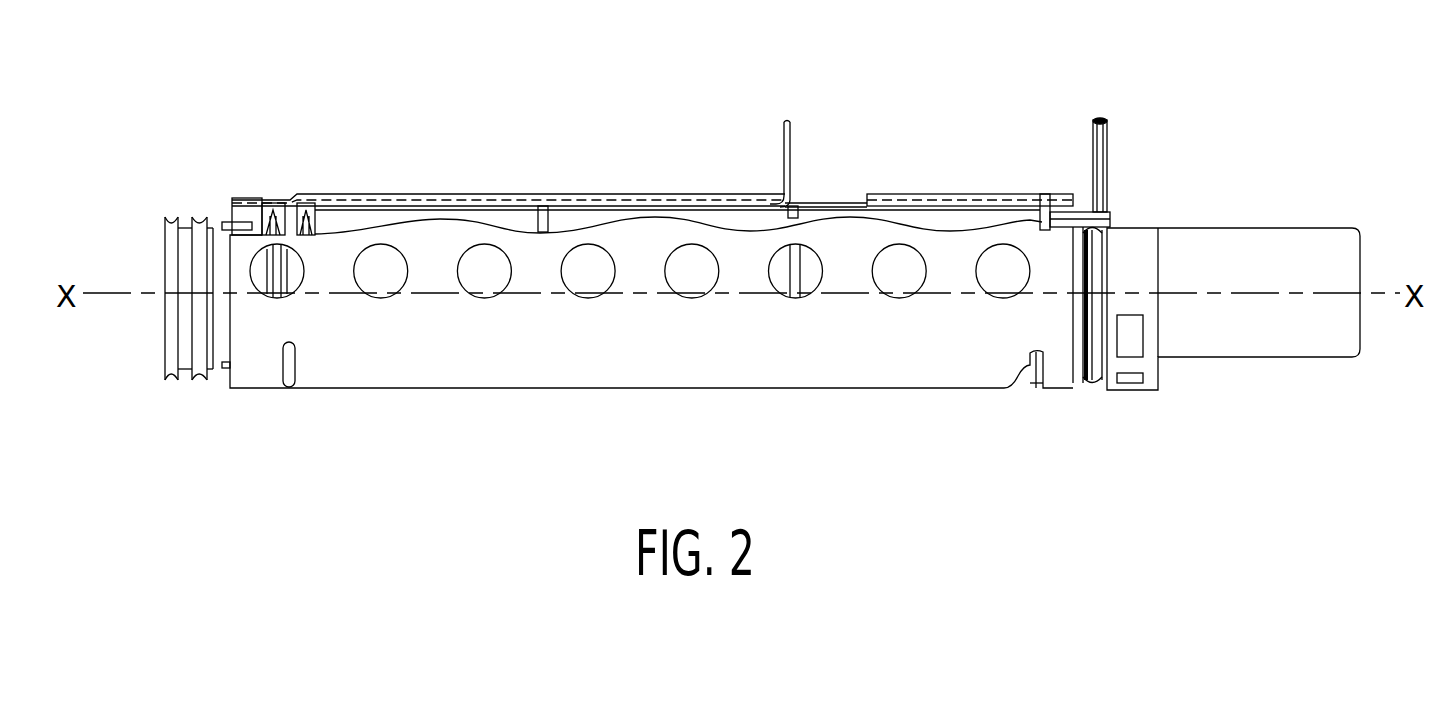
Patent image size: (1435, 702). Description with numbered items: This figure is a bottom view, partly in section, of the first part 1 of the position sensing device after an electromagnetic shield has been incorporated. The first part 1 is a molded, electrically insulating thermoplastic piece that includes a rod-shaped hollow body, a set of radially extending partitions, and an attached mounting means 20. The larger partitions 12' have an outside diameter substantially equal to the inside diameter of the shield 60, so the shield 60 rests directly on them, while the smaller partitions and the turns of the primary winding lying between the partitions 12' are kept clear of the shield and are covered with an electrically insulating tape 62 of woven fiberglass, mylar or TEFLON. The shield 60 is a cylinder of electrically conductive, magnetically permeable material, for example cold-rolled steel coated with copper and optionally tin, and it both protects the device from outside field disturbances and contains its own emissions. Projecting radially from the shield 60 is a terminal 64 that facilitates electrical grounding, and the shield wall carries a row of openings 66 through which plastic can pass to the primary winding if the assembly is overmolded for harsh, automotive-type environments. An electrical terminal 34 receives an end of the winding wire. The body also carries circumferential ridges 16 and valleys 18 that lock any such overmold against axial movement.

The first part 1 is at (193, 201).
The partitions 12' is at (652, 160).
The circumferential ridges 16 is at (1092, 380).
The valleys 18 is at (192, 373).
The mounting means 20 is at (1283, 358).
The electrical terminal 34 is at (1100, 118).
The shield 60 is at (667, 396).
The electrically insulating tape 62 is at (357, 207).
The radially-extending terminal 64 is at (784, 157).
The openings 66 is at (1003, 299).